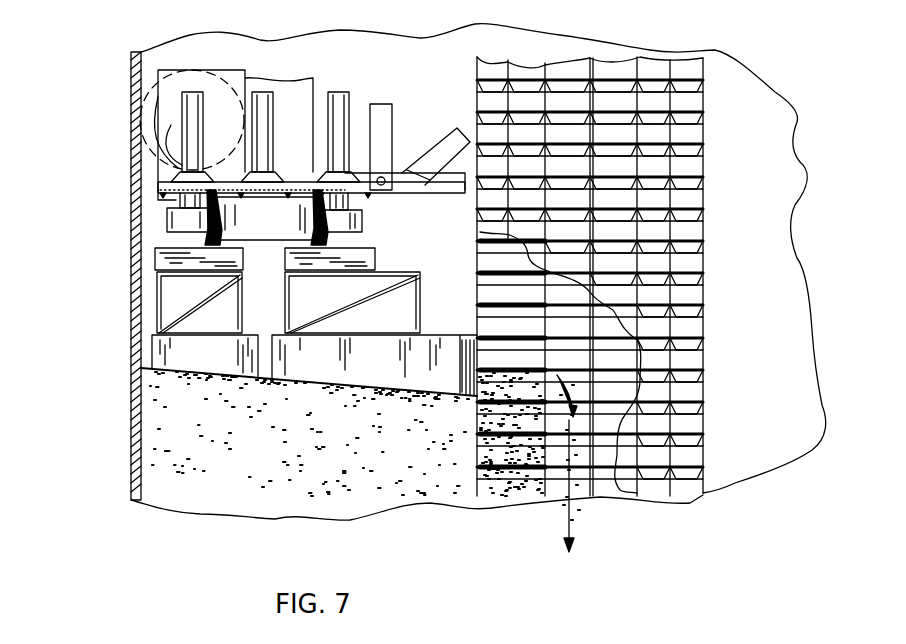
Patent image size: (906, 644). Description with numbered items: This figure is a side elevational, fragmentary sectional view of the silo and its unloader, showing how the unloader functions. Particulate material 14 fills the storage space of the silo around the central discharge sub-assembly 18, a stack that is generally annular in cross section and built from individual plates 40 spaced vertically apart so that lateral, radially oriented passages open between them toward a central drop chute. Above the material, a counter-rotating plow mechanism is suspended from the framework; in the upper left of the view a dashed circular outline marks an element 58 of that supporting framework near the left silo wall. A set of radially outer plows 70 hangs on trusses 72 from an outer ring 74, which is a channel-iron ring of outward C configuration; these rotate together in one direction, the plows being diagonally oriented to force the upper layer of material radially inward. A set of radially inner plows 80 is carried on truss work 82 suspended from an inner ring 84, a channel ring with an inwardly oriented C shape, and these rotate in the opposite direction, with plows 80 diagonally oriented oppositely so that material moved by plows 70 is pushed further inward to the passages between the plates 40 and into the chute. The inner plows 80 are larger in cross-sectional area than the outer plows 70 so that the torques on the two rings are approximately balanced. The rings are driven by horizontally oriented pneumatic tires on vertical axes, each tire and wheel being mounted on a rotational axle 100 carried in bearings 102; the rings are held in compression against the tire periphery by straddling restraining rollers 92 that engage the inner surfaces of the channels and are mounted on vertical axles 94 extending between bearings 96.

The particulate material 14 is at (301, 447).
The central discharge sub-assembly 18 is at (703, 193).
The plates 40 is at (483, 303).
The roller 58 is at (151, 101).
The radially outer plows 70 is at (211, 356).
The trusses 72 is at (195, 293).
The outer ring 74 is at (215, 240).
The radially inner plows 80 is at (376, 360).
The truss work 82 is at (418, 313).
The inner ring 84 is at (322, 248).
The restraining rollers 92 is at (168, 218).
The vertical axles 94 is at (185, 205).
The bearings 96 is at (160, 180).
The rotational axle 100 is at (263, 108).
The bearings 102 is at (283, 175).